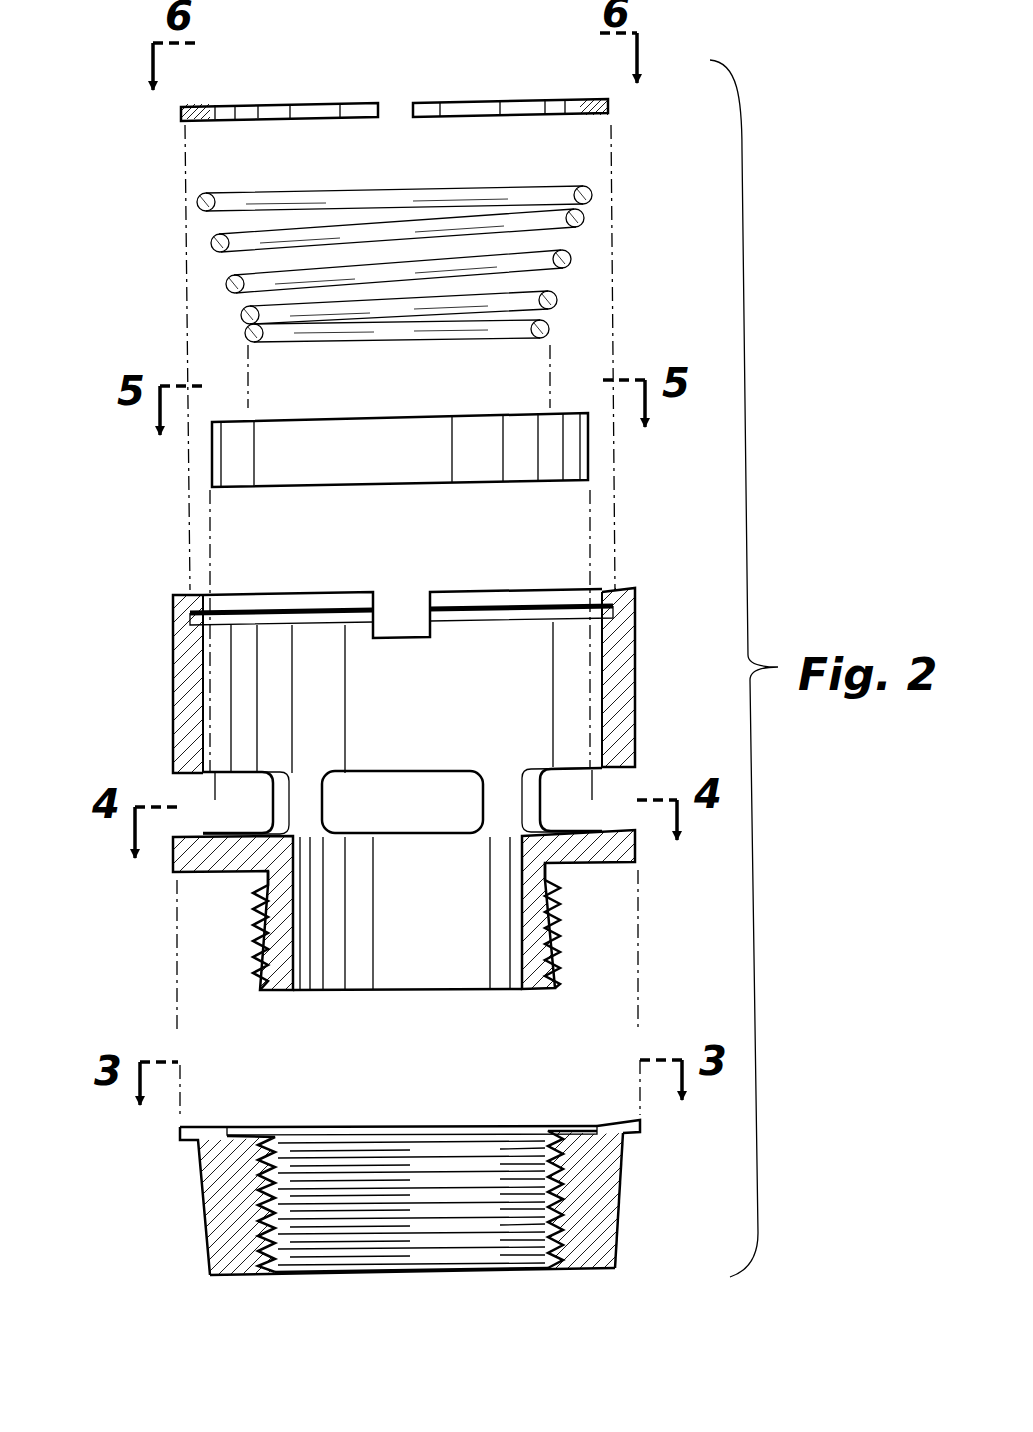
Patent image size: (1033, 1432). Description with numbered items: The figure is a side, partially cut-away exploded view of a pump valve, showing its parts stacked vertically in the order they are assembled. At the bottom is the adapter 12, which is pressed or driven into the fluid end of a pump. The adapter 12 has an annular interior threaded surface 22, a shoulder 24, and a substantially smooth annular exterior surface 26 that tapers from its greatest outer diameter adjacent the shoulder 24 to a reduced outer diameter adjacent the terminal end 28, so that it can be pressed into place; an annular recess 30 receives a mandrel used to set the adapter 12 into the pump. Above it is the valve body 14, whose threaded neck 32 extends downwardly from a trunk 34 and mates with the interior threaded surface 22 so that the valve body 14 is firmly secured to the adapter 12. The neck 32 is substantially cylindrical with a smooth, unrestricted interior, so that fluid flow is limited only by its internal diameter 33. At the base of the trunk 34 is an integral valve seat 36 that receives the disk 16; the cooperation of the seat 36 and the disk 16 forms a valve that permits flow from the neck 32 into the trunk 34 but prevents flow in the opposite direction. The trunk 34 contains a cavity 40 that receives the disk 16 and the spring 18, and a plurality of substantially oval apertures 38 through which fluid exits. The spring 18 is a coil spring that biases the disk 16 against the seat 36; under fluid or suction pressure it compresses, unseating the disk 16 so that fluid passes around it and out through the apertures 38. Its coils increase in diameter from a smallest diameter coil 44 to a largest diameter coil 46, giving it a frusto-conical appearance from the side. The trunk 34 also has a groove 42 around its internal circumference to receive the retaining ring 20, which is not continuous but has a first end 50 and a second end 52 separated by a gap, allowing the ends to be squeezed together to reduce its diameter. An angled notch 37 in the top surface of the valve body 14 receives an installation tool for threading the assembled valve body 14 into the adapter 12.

The adapter 12 is at (413, 1201).
The valve body 14 is at (406, 787).
The disk 16 is at (212, 464).
The spring 18 is at (394, 240).
The retaining ring 20 is at (363, 119).
The annular interior threaded surface 22 is at (278, 1232).
The shoulder 24 is at (645, 1125).
The annular exterior surface 26 is at (620, 1215).
The terminal end 28 is at (590, 1275).
The annular recess 30 is at (240, 1133).
The neck 32 is at (262, 965).
The internal diameter 33 is at (527, 960).
The trunk 34 is at (172, 705).
The valve seat 36 is at (403, 933).
The notch 37 is at (428, 600).
The apertures 38 is at (258, 797).
The cavity 40 is at (570, 673).
The groove 42 is at (613, 610).
The smallest diameter coil 44 is at (548, 308).
The largest diameter coil 46 is at (580, 188).
The first end 50 is at (378, 100).
The second end 52 is at (413, 100).